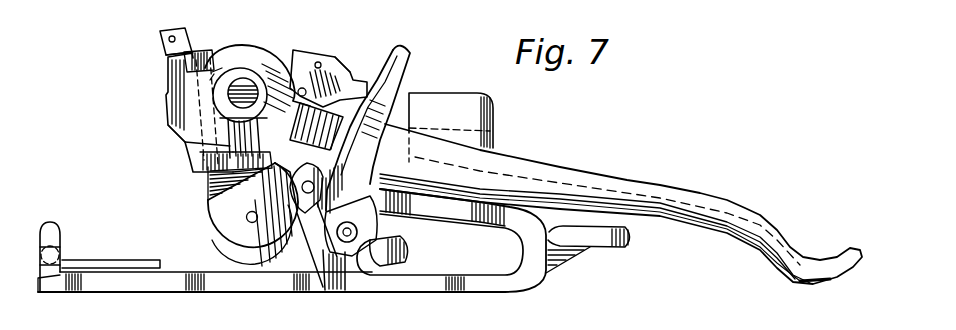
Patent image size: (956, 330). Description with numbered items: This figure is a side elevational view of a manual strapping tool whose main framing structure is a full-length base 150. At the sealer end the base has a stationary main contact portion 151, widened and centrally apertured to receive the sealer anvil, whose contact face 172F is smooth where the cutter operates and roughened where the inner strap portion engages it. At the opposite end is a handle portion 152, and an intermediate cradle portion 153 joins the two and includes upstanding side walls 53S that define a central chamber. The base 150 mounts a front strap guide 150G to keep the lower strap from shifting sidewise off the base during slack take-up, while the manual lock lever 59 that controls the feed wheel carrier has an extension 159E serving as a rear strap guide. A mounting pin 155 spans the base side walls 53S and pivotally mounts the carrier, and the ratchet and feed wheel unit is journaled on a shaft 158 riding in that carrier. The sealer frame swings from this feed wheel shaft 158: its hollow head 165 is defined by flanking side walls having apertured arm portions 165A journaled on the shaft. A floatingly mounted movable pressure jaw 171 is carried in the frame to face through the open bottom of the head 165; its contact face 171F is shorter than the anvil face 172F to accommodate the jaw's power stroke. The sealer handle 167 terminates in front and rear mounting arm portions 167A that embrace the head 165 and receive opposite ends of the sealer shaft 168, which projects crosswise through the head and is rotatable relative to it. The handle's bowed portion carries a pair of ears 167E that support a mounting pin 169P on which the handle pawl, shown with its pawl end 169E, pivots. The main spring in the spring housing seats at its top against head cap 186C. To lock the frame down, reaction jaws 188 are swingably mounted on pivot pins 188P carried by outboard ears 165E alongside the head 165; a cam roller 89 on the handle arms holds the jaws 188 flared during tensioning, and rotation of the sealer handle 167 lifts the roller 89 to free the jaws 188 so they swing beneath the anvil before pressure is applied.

The base 150 is at (268, 276).
The front strap guide 150G is at (52, 214).
The main contact portion 151 is at (68, 283).
The contact face 172F is at (107, 266).
The feed wheel shaft 158 is at (246, 217).
The arm portions 165A is at (215, 185).
The reaction jaws 188 is at (176, 110).
The pivot pins 188P is at (188, 18).
The contact face 171F is at (186, 147).
The movable pressure jaw 171 is at (190, 158).
The outboard ears 165E is at (209, 54).
The head 165 is at (244, 55).
The sealer shaft 168 is at (242, 90).
The stem 89 is at (253, 138).
The mounting arm portions 167A is at (315, 132).
The plate 169E is at (305, 50).
The mounting pin 169P is at (300, 88).
The ears 167E is at (308, 66).
The blade lever 59 is at (408, 65).
The mounting pin 155 is at (318, 180).
The pivot screw 53S is at (351, 226).
The cradle portion 153 is at (350, 278).
The handle portion 152 is at (411, 285).
The extension 159E is at (412, 254).
The head cap 186C is at (441, 124).
The sealer handle 167 is at (595, 176).